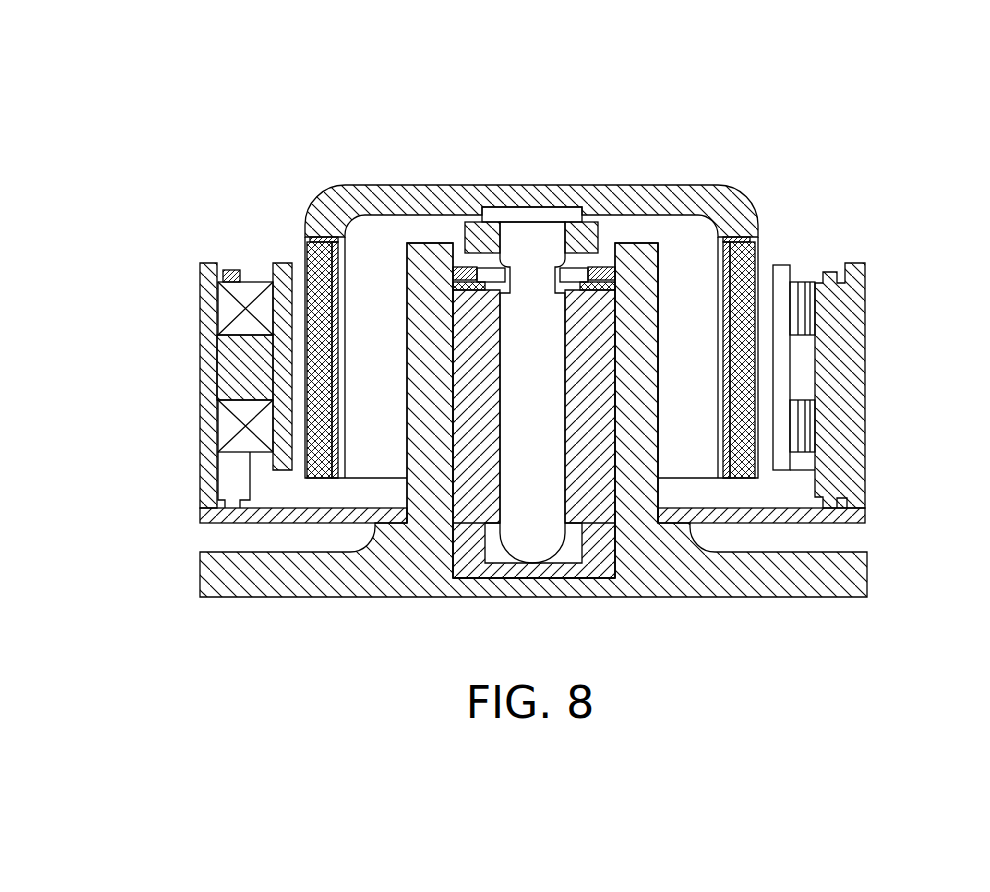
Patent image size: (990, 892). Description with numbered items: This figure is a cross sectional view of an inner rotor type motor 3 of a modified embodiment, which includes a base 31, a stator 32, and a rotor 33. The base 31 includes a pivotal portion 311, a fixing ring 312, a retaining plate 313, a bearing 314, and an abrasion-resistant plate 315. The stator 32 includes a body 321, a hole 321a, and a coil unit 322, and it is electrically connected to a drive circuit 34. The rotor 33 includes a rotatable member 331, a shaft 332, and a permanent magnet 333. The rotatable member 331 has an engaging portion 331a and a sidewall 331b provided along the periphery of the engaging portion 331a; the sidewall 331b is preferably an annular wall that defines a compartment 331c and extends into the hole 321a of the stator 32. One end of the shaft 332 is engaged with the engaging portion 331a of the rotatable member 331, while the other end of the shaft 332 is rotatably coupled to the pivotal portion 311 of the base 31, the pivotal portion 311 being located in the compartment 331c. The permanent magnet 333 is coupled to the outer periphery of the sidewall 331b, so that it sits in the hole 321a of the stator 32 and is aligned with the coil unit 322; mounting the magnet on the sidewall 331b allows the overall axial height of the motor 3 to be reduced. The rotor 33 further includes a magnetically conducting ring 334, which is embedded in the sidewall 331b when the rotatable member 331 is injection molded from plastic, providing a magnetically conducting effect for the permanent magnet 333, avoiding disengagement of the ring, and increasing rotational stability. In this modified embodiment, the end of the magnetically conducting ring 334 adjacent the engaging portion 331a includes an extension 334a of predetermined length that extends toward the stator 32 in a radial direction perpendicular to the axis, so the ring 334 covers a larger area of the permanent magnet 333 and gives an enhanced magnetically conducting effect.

The inner rotor type motor 3 is at (146, 166).
The base 31 is at (208, 575).
The pivotal portion 311 is at (423, 427).
The fixing ring 312 is at (537, 327).
The retaining plate 313 is at (593, 333).
The bearing 314 is at (658, 302).
The abrasion-resistant plate 315 is at (625, 563).
The stator 32 is at (878, 323).
The body 321 is at (853, 370).
The hole 321a is at (763, 275).
The coil unit 322 is at (818, 263).
The rotor 33 is at (748, 182).
The rotatable member 331 is at (228, 50).
The engaging portion 331a is at (388, 231).
The sidewall 331b is at (343, 237).
The compartment 331c is at (343, 325).
The shaft 332 is at (540, 297).
The permanent magnet 333 is at (307, 357).
The magnetically conducting ring 334 is at (333, 288).
The extension 334a is at (317, 236).
The drive circuit 34 is at (797, 523).